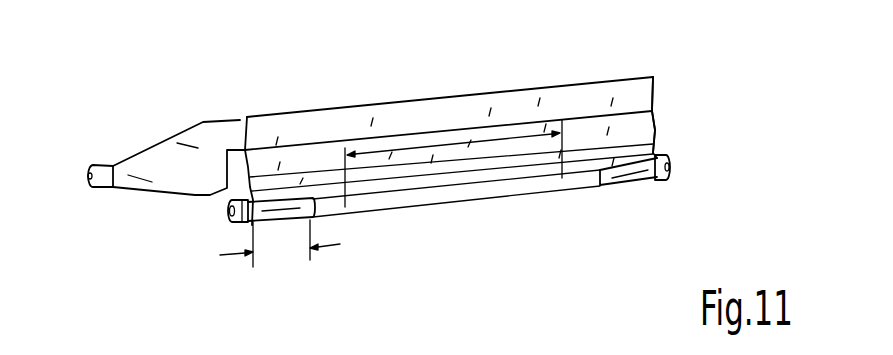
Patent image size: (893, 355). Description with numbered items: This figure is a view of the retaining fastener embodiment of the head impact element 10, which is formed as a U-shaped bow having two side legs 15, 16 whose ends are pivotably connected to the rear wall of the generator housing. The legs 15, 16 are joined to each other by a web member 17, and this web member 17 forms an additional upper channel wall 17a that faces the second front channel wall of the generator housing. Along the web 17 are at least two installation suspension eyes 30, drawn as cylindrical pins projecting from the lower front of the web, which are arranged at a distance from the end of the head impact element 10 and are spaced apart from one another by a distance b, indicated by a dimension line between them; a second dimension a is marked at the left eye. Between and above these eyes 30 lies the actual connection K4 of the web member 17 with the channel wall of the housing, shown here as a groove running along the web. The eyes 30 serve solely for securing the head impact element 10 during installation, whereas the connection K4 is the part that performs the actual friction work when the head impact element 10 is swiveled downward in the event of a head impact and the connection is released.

The head impact element 10 is at (612, 80).
The side leg 15 is at (168, 163).
The side leg 16 is at (655, 88).
The web member 17 is at (463, 93).
The upper channel wall 17a is at (378, 123).
The installation suspension eyes 30 is at (344, 205).
The connection K4 is at (627, 132).
The dimension a is at (280, 246).
The distance b is at (453, 163).